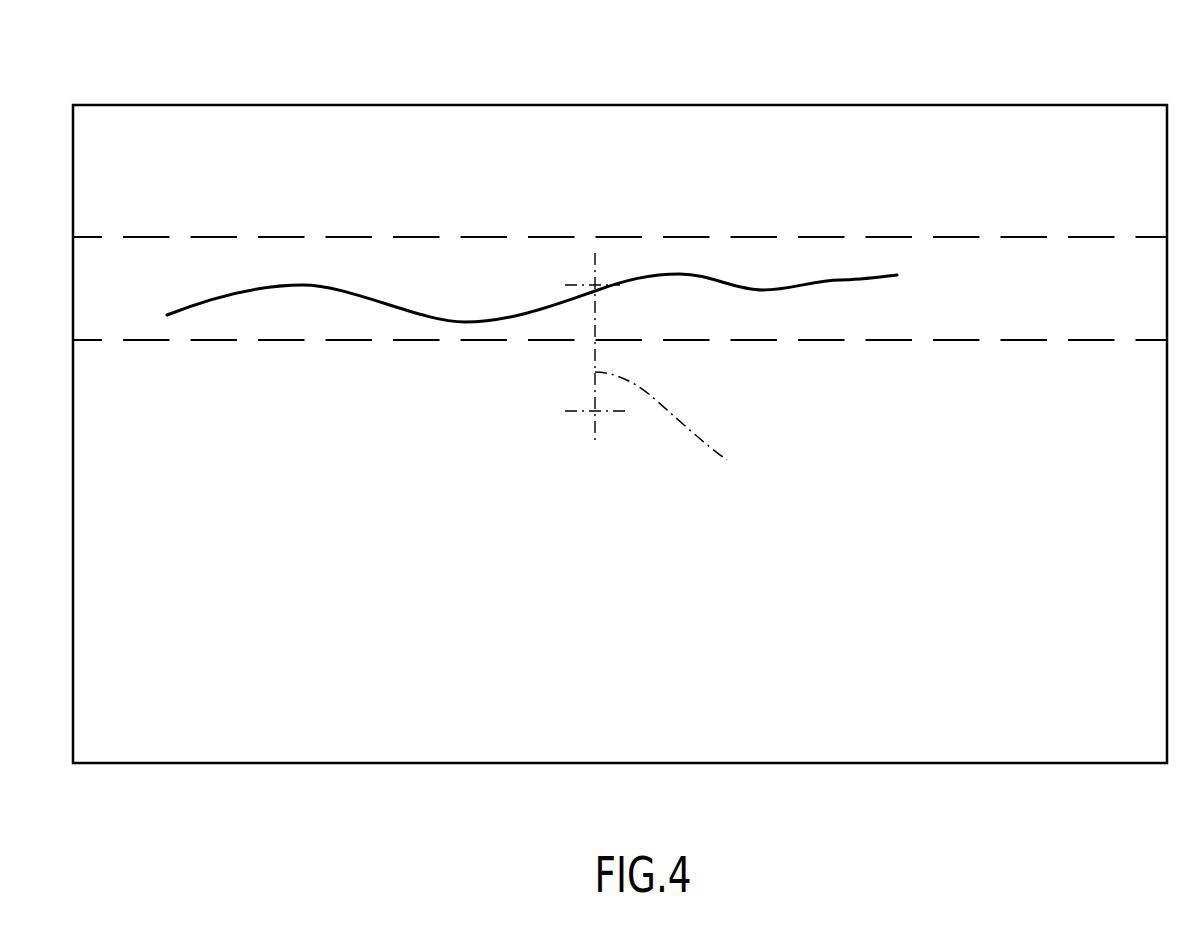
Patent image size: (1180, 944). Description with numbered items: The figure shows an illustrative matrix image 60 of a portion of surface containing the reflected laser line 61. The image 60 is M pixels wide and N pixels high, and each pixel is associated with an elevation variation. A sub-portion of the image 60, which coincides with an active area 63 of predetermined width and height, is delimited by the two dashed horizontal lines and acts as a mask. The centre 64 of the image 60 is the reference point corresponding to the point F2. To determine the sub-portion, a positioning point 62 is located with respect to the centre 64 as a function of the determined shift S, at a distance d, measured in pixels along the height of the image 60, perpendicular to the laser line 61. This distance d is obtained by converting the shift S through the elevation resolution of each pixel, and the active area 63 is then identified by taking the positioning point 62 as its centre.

The matrix image 60 is at (405, 105).
The reflected laser line 61 is at (677, 275).
The positioning point 62 is at (598, 287).
The active area 63 is at (763, 237).
The centre of the image 64 is at (596, 411).
The distance d is at (671, 424).